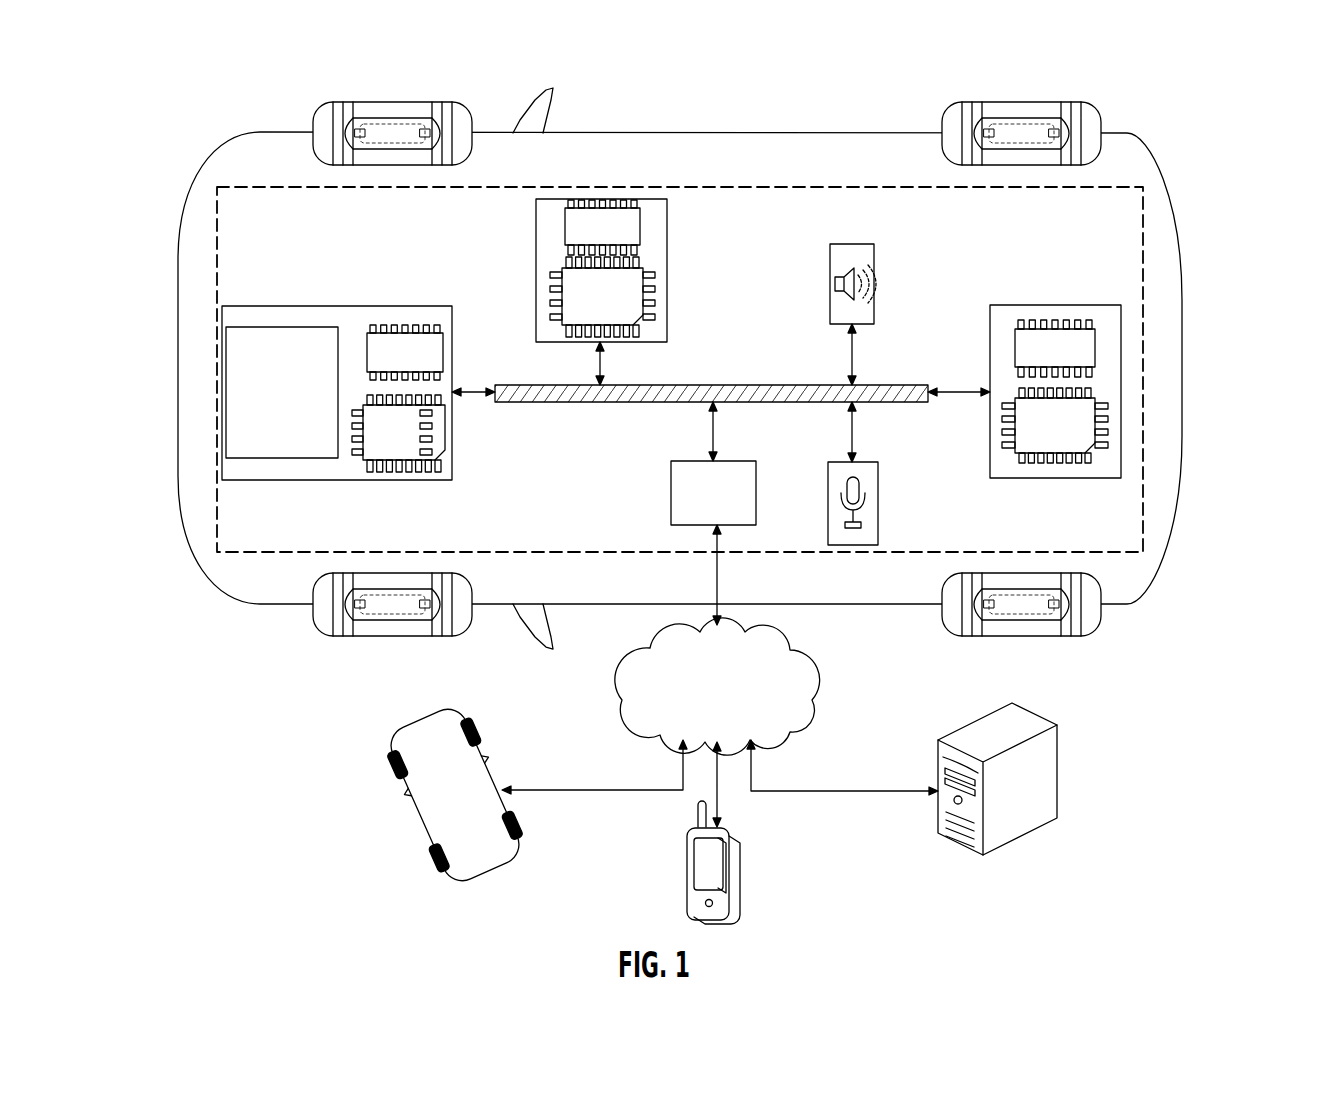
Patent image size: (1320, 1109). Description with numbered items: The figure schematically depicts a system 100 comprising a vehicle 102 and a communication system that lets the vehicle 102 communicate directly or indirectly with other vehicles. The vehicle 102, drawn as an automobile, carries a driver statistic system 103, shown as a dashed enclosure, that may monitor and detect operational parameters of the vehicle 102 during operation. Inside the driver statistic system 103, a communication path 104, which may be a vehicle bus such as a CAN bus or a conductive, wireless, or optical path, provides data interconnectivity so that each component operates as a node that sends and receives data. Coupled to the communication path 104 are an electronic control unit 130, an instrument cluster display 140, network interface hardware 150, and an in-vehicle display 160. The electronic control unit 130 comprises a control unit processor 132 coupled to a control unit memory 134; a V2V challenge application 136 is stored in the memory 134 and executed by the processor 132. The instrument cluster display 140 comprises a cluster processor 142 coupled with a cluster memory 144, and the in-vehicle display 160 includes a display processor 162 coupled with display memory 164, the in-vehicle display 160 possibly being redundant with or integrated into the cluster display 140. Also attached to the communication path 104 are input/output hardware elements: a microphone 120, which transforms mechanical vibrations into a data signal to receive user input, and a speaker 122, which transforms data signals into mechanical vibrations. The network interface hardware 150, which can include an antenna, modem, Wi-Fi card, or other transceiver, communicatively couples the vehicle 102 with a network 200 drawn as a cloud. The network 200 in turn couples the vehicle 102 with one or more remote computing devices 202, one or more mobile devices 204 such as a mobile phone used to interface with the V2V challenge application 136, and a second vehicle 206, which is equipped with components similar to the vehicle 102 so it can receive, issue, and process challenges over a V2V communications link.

The system 100 is at (218, 100).
The vehicle 102 is at (1183, 398).
The driver statistic system 103 is at (1143, 265).
The communication path 104 is at (598, 403).
The microphone 120 is at (878, 505).
The speaker 122 is at (876, 282).
The electronic control unit 130 is at (378, 369).
The control unit processor 132 is at (414, 447).
The control unit memory 134 is at (426, 367).
The V2V challenge application 136 is at (282, 327).
The instrument cluster display 140 is at (561, 292).
The cluster processor 142 is at (623, 310).
The cluster memory 144 is at (624, 241).
The network interface hardware 150 is at (670, 490).
The in-vehicle display 160 is at (1024, 428).
The display processor 162 is at (1076, 439).
The display memory 164 is at (1076, 363).
The network 200 is at (815, 682).
The remote computing device 202 is at (1060, 772).
The mobile device 204 is at (745, 882).
The second vehicle 206 is at (410, 805).